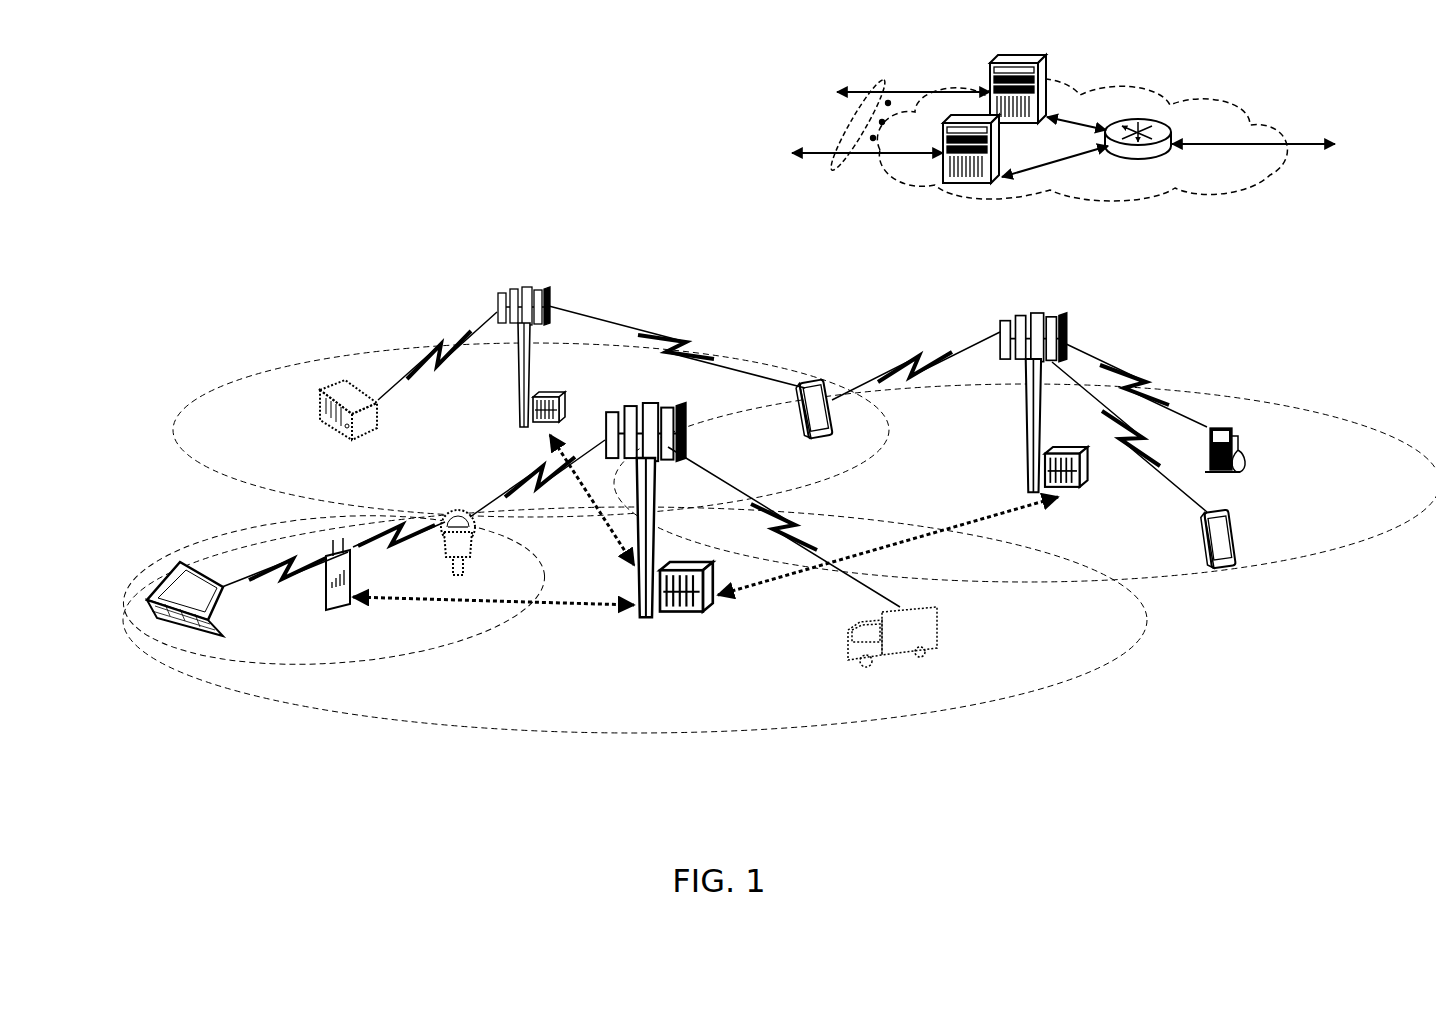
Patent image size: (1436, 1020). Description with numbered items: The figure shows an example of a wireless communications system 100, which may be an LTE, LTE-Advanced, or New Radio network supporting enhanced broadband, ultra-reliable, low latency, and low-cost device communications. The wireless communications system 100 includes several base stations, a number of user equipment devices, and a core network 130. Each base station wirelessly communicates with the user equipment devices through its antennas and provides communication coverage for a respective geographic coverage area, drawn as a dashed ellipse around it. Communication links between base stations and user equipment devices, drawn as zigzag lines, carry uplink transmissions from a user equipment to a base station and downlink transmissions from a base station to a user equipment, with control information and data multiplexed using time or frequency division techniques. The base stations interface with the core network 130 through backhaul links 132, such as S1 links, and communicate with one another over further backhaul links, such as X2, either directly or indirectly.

The wireless communications system 100 is at (1250, 802).
The core network 130 is at (1113, 200).
The backhaul link 132 is at (838, 170).